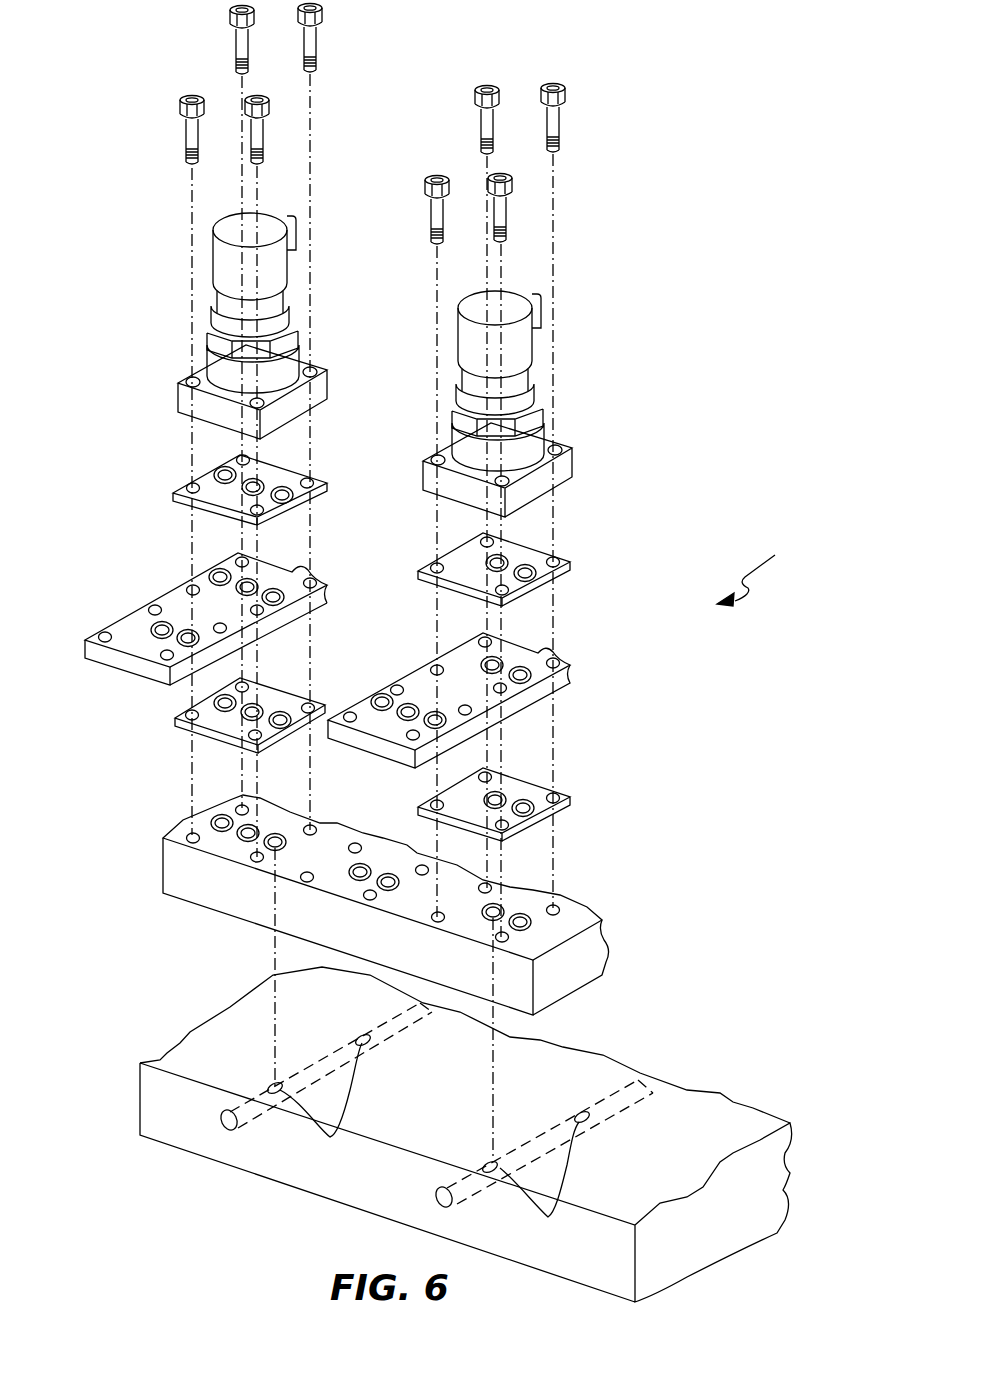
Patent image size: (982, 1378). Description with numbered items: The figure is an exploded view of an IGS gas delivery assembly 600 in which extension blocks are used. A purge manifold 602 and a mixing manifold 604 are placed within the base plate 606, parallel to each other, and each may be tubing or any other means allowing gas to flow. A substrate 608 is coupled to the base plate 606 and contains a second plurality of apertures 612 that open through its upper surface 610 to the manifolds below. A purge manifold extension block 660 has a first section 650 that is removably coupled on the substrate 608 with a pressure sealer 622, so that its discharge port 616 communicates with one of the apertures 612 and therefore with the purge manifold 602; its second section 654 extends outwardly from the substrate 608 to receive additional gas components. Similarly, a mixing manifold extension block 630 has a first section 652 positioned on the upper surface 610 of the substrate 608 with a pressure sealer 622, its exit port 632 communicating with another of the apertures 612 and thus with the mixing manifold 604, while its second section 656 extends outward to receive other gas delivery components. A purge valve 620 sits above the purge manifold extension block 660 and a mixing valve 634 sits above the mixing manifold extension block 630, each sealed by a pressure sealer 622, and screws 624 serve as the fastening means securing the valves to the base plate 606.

The valve manifold assembly 600 is at (770, 571).
The purge manifold 602 is at (432, 1012).
The mixing manifold 604 is at (653, 1093).
The base plate 606 is at (231, 1064).
The substrate 608 is at (572, 972).
The upper surface 610 is at (597, 918).
The second plurality of apertures 612 is at (275, 835).
The discharge port 616 is at (310, 583).
The purge valve 620 is at (213, 265).
The pressure sealer 622 is at (228, 481).
The screws 624 is at (237, 12).
The mixing manifold extension block 630 is at (572, 672).
The exit port 632 is at (540, 566).
The mixing valve 634 is at (520, 345).
The first section 650 is at (205, 588).
The first section 652 is at (525, 652).
The second section 654 is at (135, 620).
The second section 656 is at (420, 700).
The purge manifold extension block 660 is at (325, 592).